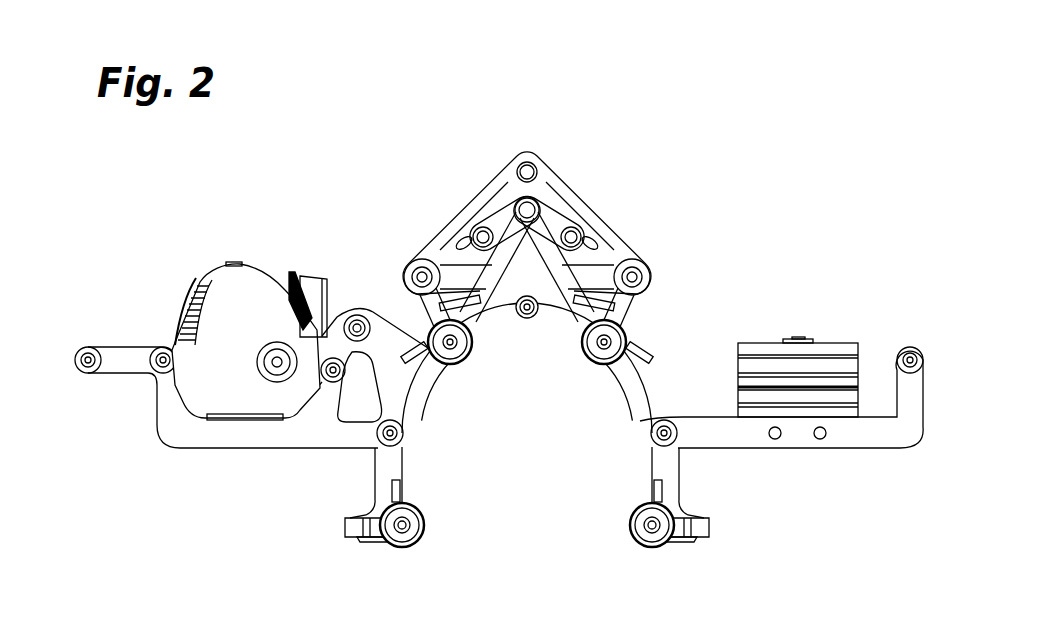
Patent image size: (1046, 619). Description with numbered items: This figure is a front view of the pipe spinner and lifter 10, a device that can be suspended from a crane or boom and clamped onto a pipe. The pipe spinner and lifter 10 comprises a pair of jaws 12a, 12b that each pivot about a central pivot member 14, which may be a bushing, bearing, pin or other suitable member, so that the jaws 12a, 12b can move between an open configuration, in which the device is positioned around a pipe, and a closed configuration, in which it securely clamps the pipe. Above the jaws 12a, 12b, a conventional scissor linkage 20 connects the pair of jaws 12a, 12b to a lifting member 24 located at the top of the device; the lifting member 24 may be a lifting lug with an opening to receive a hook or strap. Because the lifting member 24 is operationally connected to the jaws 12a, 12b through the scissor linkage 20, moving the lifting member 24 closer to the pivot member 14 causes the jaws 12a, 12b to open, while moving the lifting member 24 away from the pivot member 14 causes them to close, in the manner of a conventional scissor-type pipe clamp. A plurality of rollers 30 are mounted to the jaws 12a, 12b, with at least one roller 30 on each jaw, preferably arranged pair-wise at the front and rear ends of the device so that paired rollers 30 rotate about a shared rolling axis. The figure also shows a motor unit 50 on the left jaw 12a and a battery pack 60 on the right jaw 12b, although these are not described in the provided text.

The pipe spinner and lifter 10 is at (657, 88).
The jaw 12a is at (357, 472).
The jaw 12b is at (698, 478).
The pivot member 14 is at (527, 335).
The scissor linkage 20 is at (425, 216).
The lifting member 24 is at (497, 157).
The rollers 30 is at (473, 363).
The motor 50 is at (157, 265).
The battery pack 60 is at (827, 312).